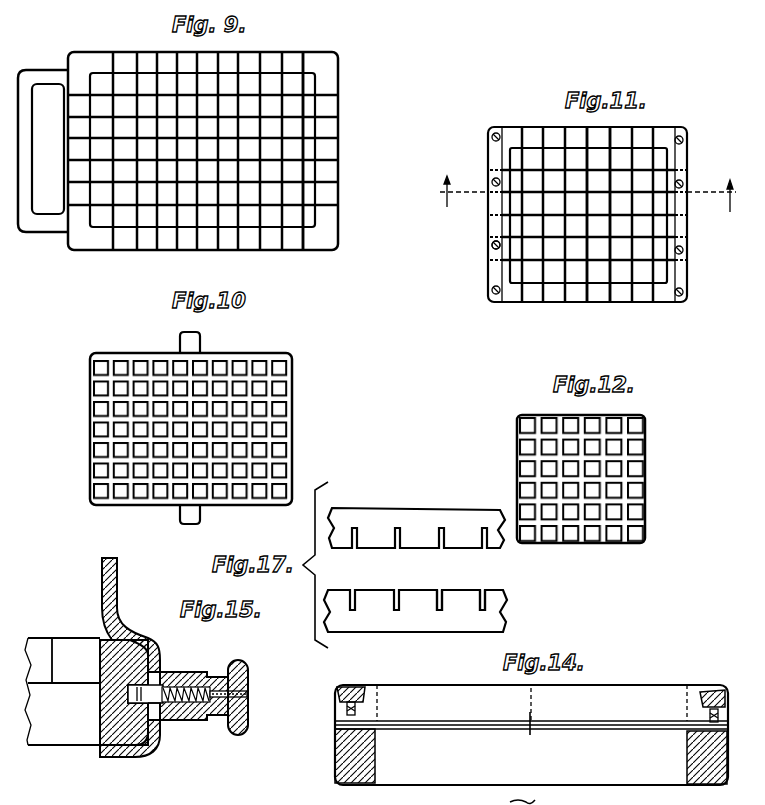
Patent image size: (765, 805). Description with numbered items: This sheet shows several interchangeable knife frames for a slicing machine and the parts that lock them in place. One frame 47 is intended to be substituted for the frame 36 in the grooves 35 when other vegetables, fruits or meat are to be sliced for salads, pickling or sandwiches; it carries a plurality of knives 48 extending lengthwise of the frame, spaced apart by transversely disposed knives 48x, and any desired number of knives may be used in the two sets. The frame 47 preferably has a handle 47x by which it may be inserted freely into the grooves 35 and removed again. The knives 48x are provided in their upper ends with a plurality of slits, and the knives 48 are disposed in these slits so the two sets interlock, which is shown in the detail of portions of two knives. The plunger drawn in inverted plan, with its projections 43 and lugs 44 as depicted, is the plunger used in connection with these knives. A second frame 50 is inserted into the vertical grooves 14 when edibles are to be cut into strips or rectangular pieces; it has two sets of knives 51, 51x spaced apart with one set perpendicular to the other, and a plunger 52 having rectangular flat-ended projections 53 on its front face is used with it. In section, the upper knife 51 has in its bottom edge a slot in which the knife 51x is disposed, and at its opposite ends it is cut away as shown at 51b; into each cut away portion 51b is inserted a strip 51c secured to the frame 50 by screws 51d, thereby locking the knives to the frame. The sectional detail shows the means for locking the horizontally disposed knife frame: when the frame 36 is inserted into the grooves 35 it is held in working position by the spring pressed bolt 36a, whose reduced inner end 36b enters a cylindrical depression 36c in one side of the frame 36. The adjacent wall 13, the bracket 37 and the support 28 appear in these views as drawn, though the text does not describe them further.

In FIG. 9, the frame 47 is at (338, 91).
In FIG. 9, the handle 47x is at (43, 228).
In FIG. 17, the handle 47x is at (483, 591).
In FIG. 9, the knives 48 is at (305, 148).
In FIG. 17, the knives 48 is at (386, 512).
In FIG. 9, the transversely disposed knives 48x is at (283, 222).
In FIG. 17, the transversely disposed knives 48x is at (400, 626).
In FIG. 10, the perforated plate 43 is at (295, 428).
In FIG. 10, the lugs 44 is at (212, 518).
In FIG. 11, the frame 50 is at (511, 303).
In FIG. 14, the frame 50 is at (403, 783).
In FIG. 11, the knives 51 is at (640, 254).
In FIG. 14, the knives 51 is at (614, 697).
In FIG. 11, the strip 51c is at (489, 272).
In FIG. 14, the strip 51c is at (342, 690).
In FIG. 11, the screws 51d is at (494, 245).
In FIG. 14, the screws 51d is at (705, 675).
In FIG. 11, the knives 51x is at (640, 285).
In FIG. 14, the knives 51x is at (536, 726).
In FIG. 14, the cut away portion 51b is at (675, 680).
In FIG. 11, the vertical grooves 14 is at (588, 194).
In FIG. 12, the plunger 52 is at (645, 492).
In FIG. 12, the rectangular flat-ended projections 53 is at (640, 472).
In FIG. 15, the wall 13 is at (117, 583).
In FIG. 15, the grooves 35 is at (120, 762).
In FIG. 15, the frame 36 is at (100, 735).
In FIG. 15, the spring pressed bolt 36a is at (248, 676).
In FIG. 15, the reduced inner end 36b is at (152, 690).
In FIG. 15, the cylindrical depression 36c is at (158, 727).
In FIG. 15, the bracket 37 is at (58, 655).
In FIG. 14, the support 28 is at (509, 797).